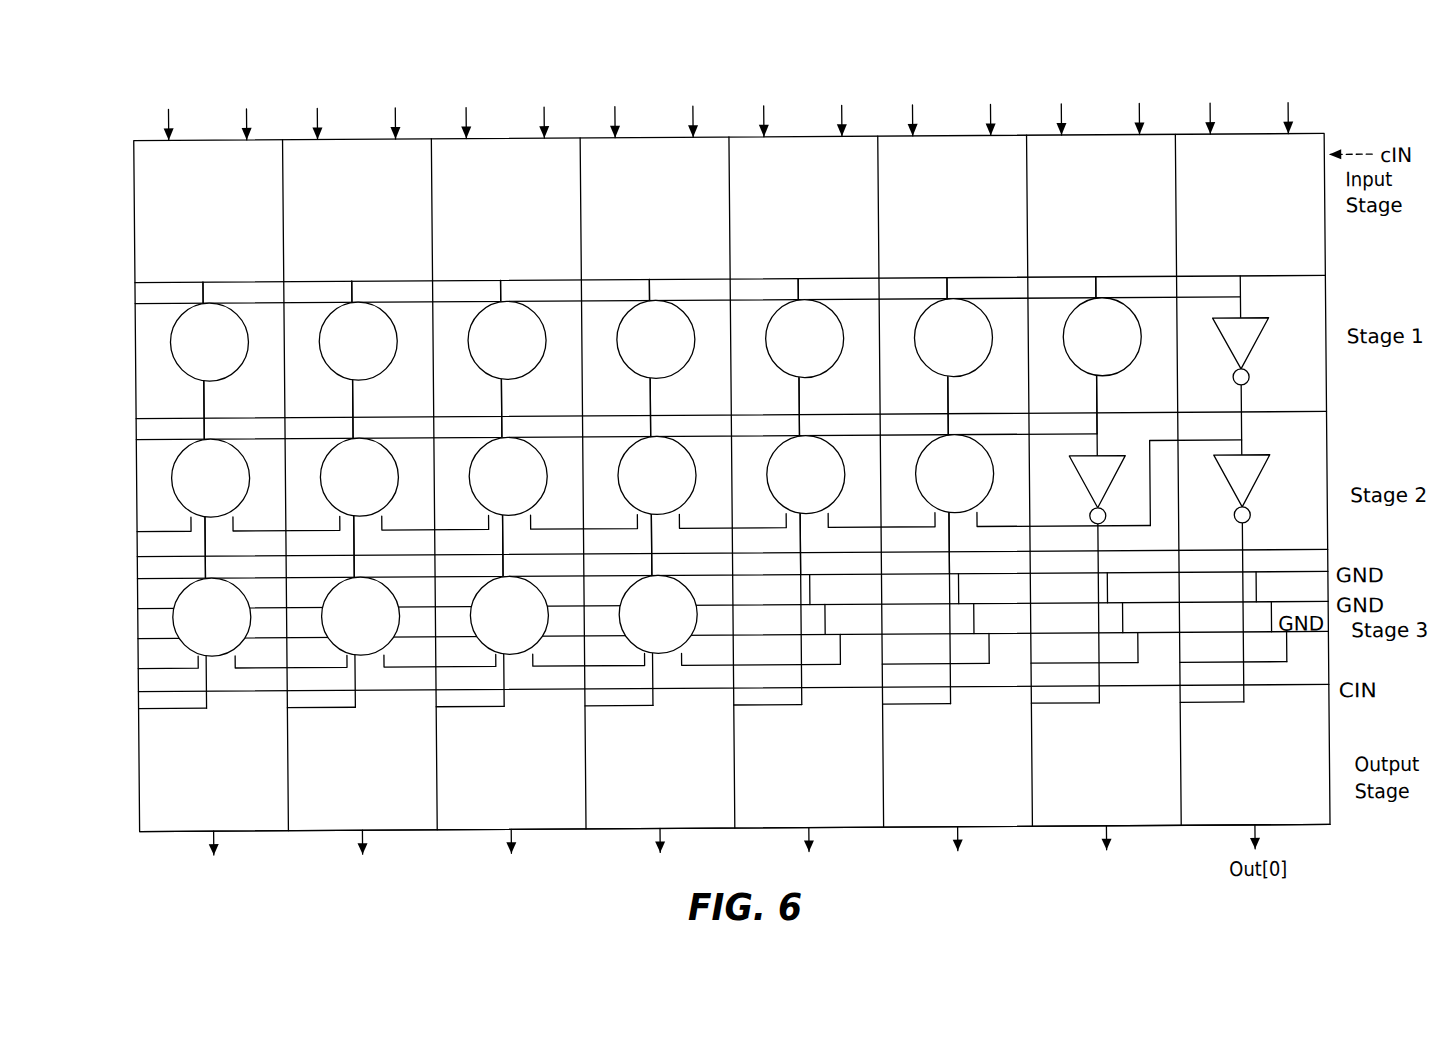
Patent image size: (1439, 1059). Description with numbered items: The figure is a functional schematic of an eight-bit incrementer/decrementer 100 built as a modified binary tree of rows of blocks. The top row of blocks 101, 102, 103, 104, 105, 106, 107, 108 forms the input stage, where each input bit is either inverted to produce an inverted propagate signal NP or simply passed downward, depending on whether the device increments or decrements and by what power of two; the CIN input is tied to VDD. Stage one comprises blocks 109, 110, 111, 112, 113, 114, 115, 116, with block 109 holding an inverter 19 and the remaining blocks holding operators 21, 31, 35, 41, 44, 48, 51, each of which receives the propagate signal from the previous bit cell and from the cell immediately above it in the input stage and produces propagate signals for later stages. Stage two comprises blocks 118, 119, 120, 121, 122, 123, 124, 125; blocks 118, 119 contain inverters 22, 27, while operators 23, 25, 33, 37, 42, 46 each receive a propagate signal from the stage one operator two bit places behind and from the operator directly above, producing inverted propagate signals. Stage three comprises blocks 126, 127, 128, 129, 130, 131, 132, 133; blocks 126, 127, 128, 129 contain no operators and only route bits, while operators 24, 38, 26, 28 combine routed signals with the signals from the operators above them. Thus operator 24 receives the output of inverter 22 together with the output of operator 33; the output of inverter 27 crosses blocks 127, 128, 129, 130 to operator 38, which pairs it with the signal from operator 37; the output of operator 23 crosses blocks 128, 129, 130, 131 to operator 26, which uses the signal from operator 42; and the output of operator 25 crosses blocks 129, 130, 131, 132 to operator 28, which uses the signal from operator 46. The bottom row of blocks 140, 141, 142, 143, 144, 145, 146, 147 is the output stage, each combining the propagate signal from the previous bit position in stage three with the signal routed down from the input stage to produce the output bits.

The incrementer/decrementer 100 is at (738, 70).
The input stage bit cell 101 is at (1247, 122).
The input stage bit cell 102 is at (1099, 123).
The input stage bit cell 103 is at (950, 124).
The input stage bit cell 104 is at (801, 125).
The input stage bit cell 105 is at (652, 126).
The input stage bit cell 106 is at (503, 127).
The input stage bit cell 107 is at (355, 128).
The input stage bit cell 108 is at (206, 129).
The stage 1 block 109 is at (1315, 291).
The stage 1 block 110 is at (1107, 287).
The stage 1 block 111 is at (970, 287).
The stage 1 block 112 is at (821, 287).
The stage 1 block 113 is at (672, 287).
The stage 1 block 114 is at (523, 287).
The stage 1 block 115 is at (374, 287).
The stage 1 block 116 is at (226, 287).
The stage 2 block 118 is at (1303, 457).
The stage 2 block 119 is at (1162, 412).
The stage 2 block 120 is at (1013, 412).
The stage 2 block 121 is at (864, 412).
The stage 2 block 122 is at (715, 412).
The stage 2 block 123 is at (566, 412).
The stage 2 block 124 is at (418, 412).
The stage 2 block 125 is at (269, 412).
The stage 3 block 126 is at (1292, 561).
The stage 3 block 127 is at (1143, 560).
The stage 3 block 128 is at (963, 561).
The stage 3 block 129 is at (814, 561).
The stage 3 block 130 is at (665, 561).
The stage 3 block 131 is at (516, 561).
The stage 3 block 132 is at (368, 561).
The stage 3 block 133 is at (219, 561).
The output stage block 140 is at (1319, 762).
The output stage block 141 is at (1153, 764).
The output stage block 142 is at (1004, 764).
The output stage block 143 is at (856, 764).
The output stage block 144 is at (707, 764).
The output stage block 145 is at (558, 764).
The output stage block 146 is at (409, 764).
The output stage block 147 is at (260, 764).
The inverter 19 is at (1247, 353).
The operator 21 is at (1128, 335).
The inverter 22 is at (1253, 474).
The operator 23 is at (975, 478).
The operator 24 is at (630, 615).
The operator 25 is at (826, 478).
The operator 26 is at (332, 615).
The inverter 27 is at (1098, 455).
The operator 28 is at (176, 611).
The operator 31 is at (980, 332).
The operator 33 is at (677, 478).
The operator 35 is at (831, 332).
The operator 37 is at (528, 478).
The operator 38 is at (481, 615).
The operator 41 is at (682, 332).
The operator 42 is at (380, 478).
The operator 44 is at (533, 332).
The operator 46 is at (231, 478).
The operator 48 is at (384, 332).
The operator 51 is at (236, 332).